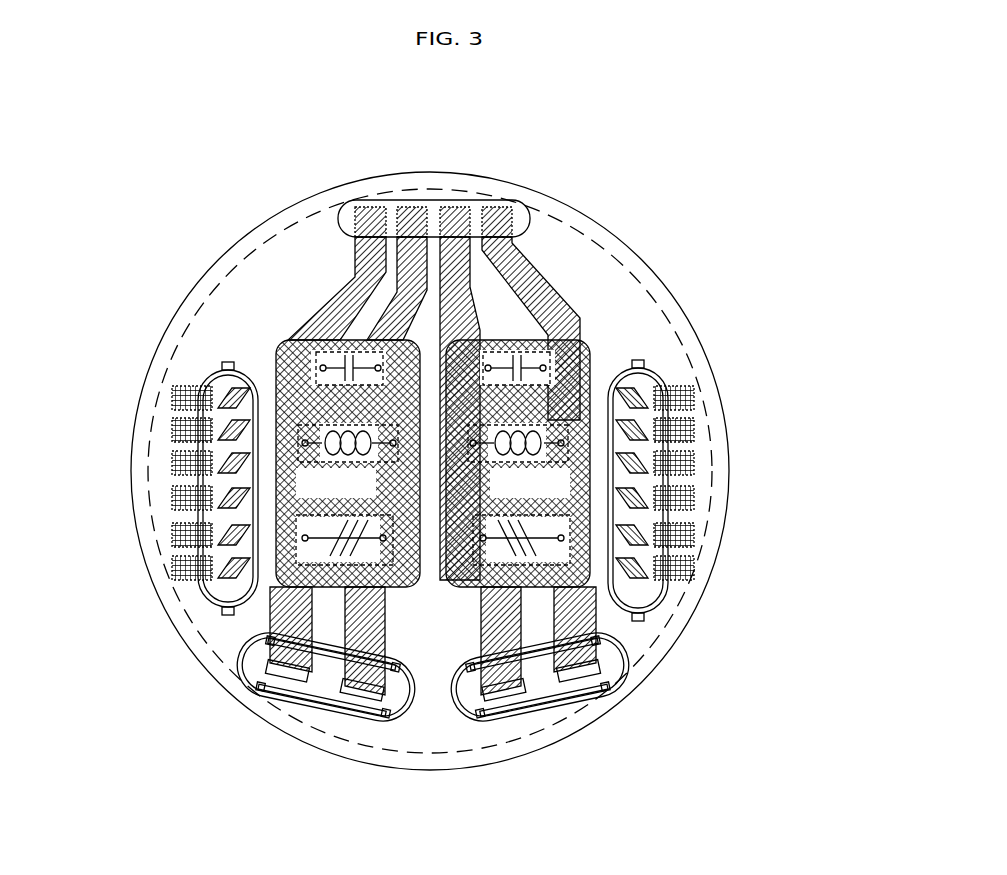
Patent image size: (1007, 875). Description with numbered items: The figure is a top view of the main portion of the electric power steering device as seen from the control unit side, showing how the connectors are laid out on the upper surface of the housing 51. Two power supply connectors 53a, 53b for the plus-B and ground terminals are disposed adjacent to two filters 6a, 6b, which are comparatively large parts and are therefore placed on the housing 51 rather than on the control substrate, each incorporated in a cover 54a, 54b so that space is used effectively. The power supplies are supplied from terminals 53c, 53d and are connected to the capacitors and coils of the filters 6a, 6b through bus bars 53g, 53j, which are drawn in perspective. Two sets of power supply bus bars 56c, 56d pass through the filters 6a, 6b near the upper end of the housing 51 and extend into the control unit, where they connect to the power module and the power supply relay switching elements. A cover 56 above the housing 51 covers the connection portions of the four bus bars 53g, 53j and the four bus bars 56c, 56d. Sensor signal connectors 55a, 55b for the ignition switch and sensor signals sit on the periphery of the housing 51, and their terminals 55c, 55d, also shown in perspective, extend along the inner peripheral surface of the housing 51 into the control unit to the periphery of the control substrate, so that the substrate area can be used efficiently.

The housing 51 is at (727, 400).
The cover 56 is at (448, 210).
The power supply bus bar 56c is at (353, 217).
The power supply bus bar 56d is at (413, 215).
The bus bar 53j is at (545, 274).
The cover 54a is at (276, 570).
The cover 54b is at (600, 582).
The bus bar 53g is at (268, 612).
The filter 6a is at (360, 690).
The filter 6b is at (548, 700).
The power supply connector 53a is at (280, 697).
The power supply connector 53b is at (575, 705).
The terminal 53c is at (300, 700).
The terminal 53d is at (372, 700).
The sensor signal connector 55a is at (205, 372).
The sensor signal connector 55b is at (657, 370).
The terminal 55c is at (165, 450).
The terminal 55d is at (700, 488).